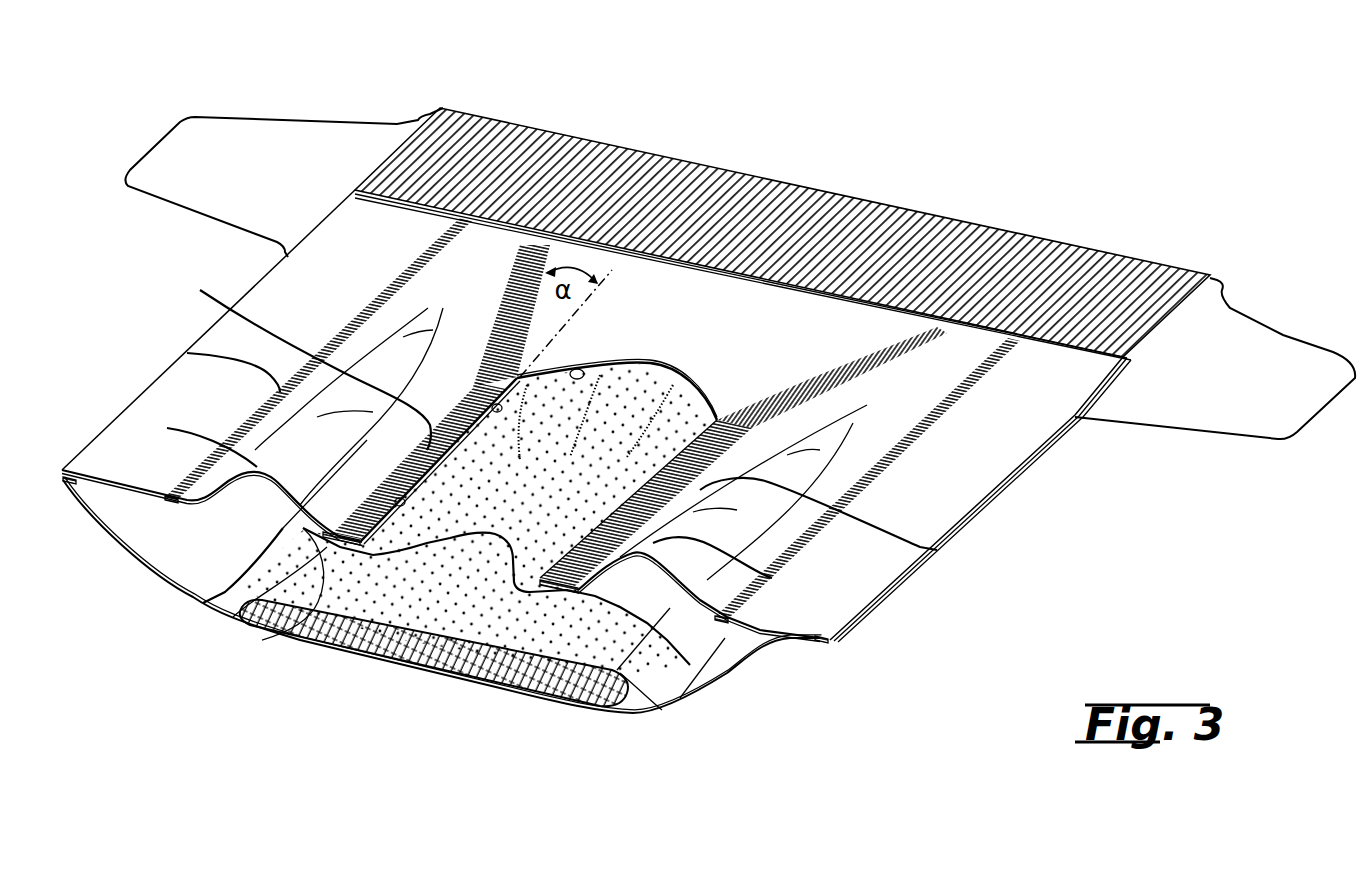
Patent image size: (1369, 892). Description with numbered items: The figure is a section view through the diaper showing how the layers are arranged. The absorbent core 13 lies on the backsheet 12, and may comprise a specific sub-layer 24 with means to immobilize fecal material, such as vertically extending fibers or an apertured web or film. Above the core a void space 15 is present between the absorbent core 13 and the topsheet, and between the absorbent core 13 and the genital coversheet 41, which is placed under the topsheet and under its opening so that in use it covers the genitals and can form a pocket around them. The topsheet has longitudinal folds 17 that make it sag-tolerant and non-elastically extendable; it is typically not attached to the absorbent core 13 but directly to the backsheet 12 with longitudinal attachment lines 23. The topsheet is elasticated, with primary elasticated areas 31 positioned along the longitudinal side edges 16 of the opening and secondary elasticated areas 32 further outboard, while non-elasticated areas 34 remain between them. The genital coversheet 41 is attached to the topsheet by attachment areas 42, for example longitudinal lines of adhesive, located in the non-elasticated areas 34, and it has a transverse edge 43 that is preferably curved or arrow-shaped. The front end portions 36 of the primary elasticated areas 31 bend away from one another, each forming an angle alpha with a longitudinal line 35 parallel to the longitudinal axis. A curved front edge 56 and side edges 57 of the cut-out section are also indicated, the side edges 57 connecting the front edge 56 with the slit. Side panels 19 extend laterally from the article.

The backsheet 12 is at (640, 717).
The absorbent core 13 is at (343, 653).
The void space 15 is at (200, 569).
The longitudinal side edges of the opening 16 is at (393, 497).
The longitudinal folds 17 is at (167, 428).
The side panel (ear) 19 is at (235, 138).
The longitudinal attachment lines 23 is at (72, 483).
The sub-layer 24 is at (233, 602).
The primary elasticated areas 31 is at (304, 386).
The secondary elasticated areas 32 is at (187, 353).
The non-elasticated areas 34 is at (937, 550).
The longitudinal line 35 is at (583, 306).
The front end portions 36 is at (540, 277).
The genital coversheet 41 is at (647, 360).
The attachment areas 42 is at (283, 535).
The transverse edge 43 is at (445, 540).
The front edge 56 is at (573, 368).
The side edges 57 is at (493, 398).